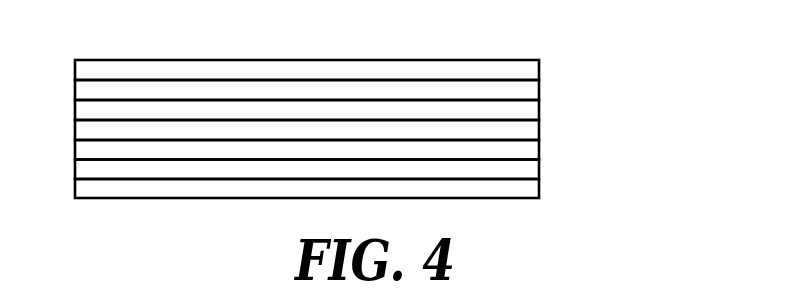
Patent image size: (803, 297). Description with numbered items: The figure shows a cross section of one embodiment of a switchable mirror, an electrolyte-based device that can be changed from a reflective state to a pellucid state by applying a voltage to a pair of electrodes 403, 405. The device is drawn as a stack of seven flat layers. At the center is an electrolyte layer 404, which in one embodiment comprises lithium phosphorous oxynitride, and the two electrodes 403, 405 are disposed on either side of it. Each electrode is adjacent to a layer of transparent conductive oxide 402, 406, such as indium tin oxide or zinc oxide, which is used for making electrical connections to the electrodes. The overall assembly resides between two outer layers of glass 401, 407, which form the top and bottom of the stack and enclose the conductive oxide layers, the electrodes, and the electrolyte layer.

The glass layer 401 is at (539, 67).
The transparent conductive oxide layer 402 is at (539, 85).
The electrode 403 is at (539, 109).
The electrolyte layer 404 is at (539, 130).
The electrode 405 is at (539, 151).
The transparent conductive oxide layer 406 is at (539, 169).
The glass layer 407 is at (539, 187).